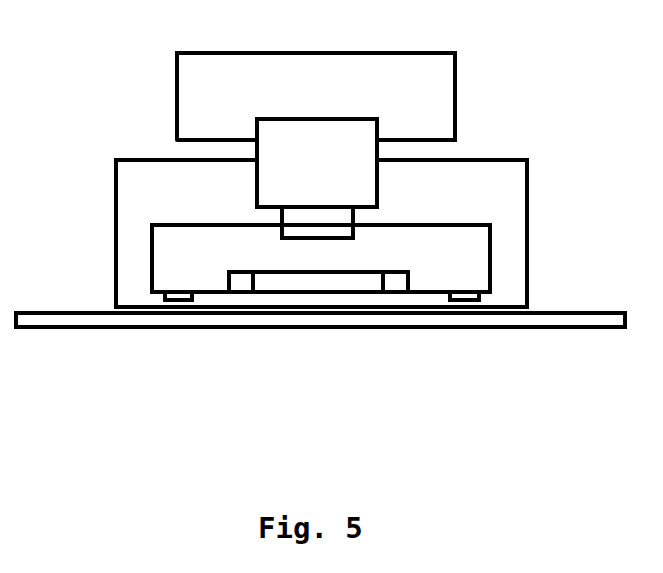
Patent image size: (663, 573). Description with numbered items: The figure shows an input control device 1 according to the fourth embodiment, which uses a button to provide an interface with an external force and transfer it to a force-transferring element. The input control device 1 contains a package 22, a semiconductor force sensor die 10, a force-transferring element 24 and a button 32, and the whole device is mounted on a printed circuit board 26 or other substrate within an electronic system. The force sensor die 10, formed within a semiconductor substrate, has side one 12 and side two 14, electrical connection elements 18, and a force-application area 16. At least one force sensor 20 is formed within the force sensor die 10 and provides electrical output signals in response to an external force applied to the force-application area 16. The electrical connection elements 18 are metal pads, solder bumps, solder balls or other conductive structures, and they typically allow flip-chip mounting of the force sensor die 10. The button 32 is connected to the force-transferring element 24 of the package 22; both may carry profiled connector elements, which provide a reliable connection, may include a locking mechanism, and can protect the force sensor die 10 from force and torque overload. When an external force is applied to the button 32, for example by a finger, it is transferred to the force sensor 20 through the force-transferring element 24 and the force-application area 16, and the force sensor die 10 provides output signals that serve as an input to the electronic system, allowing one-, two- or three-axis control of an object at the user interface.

The input control device 1 is at (76, 57).
The semiconductor force sensor die 10 is at (452, 260).
The side one of the force sensor die 12 is at (213, 293).
The side two of the force sensor die 14 is at (212, 224).
The force-application area 16 is at (342, 220).
The electrical connection elements 18 is at (462, 300).
The force sensor 20 is at (392, 283).
The package 22 is at (135, 160).
The force-transferring element 24 is at (358, 180).
The printed circuit board 26 is at (402, 328).
The button 32 is at (308, 75).